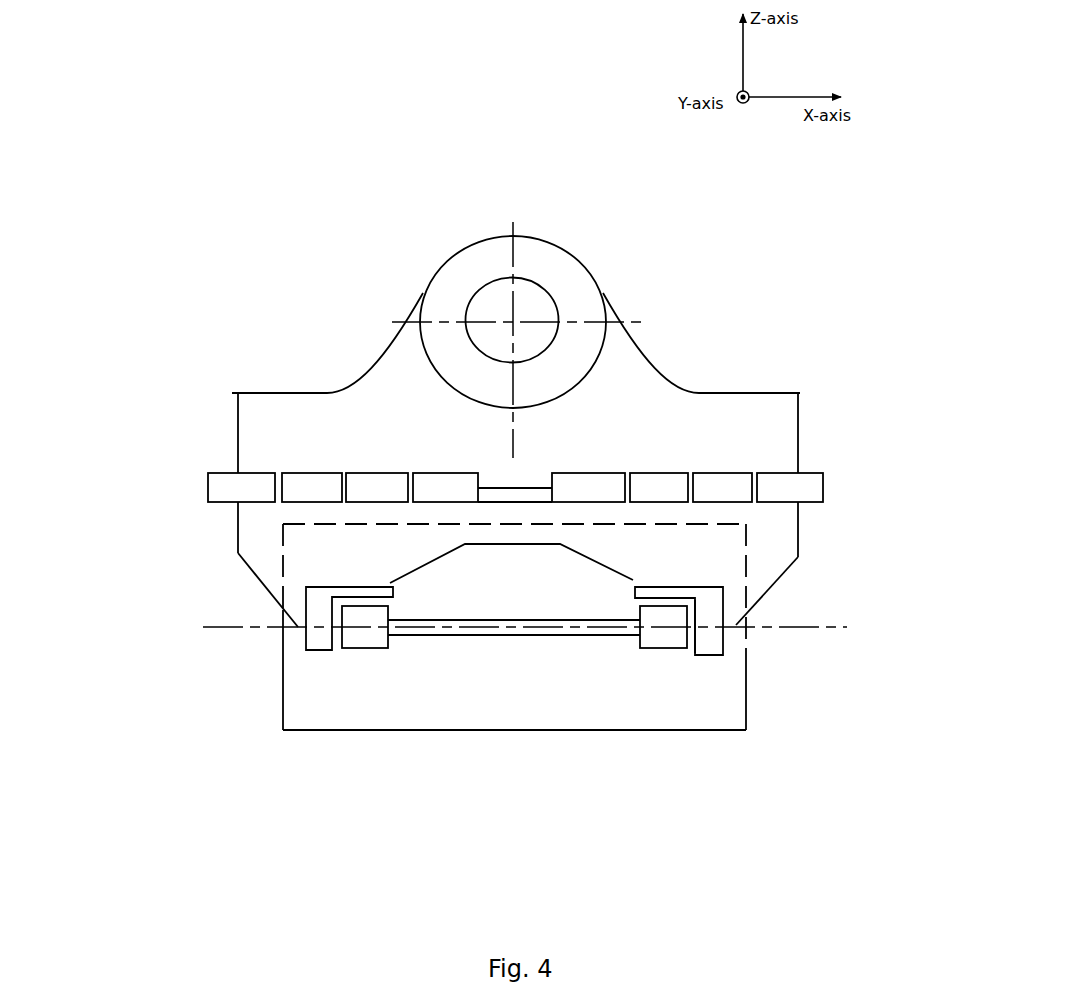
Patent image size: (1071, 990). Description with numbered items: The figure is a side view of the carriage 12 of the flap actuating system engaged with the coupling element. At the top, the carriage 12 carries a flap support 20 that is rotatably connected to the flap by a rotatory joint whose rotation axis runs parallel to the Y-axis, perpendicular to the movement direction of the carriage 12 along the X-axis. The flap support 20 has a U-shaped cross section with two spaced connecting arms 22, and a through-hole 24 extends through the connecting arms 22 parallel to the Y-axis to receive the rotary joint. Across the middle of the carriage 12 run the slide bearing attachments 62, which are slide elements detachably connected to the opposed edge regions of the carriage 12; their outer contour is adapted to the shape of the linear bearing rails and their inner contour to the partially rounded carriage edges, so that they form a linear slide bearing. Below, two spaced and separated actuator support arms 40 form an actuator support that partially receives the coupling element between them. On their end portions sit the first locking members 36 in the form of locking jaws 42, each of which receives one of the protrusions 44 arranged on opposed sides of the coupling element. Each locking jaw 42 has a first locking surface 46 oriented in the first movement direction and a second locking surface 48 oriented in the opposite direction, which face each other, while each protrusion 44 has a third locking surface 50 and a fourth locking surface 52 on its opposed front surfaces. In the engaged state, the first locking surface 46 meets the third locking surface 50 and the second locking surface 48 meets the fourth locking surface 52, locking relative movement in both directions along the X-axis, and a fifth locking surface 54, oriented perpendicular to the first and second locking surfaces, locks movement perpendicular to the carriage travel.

The carriage 12 is at (198, 400).
The flap support 20 is at (555, 318).
The connecting arms 22 is at (567, 273).
The through-hole 24 is at (519, 303).
The first locking members 36 is at (727, 602).
The actuator support arms 40 is at (725, 560).
The locking jaws 42 is at (794, 611).
The protrusions 44 is at (796, 703).
The first locking surface 46 is at (330, 615).
The second locking surface 48 is at (698, 623).
The third locking surface 50 is at (343, 633).
The fourth locking surface 52 is at (685, 613).
The fifth locking surface 54 is at (635, 580).
The slide bearing attachments 62 is at (795, 487).